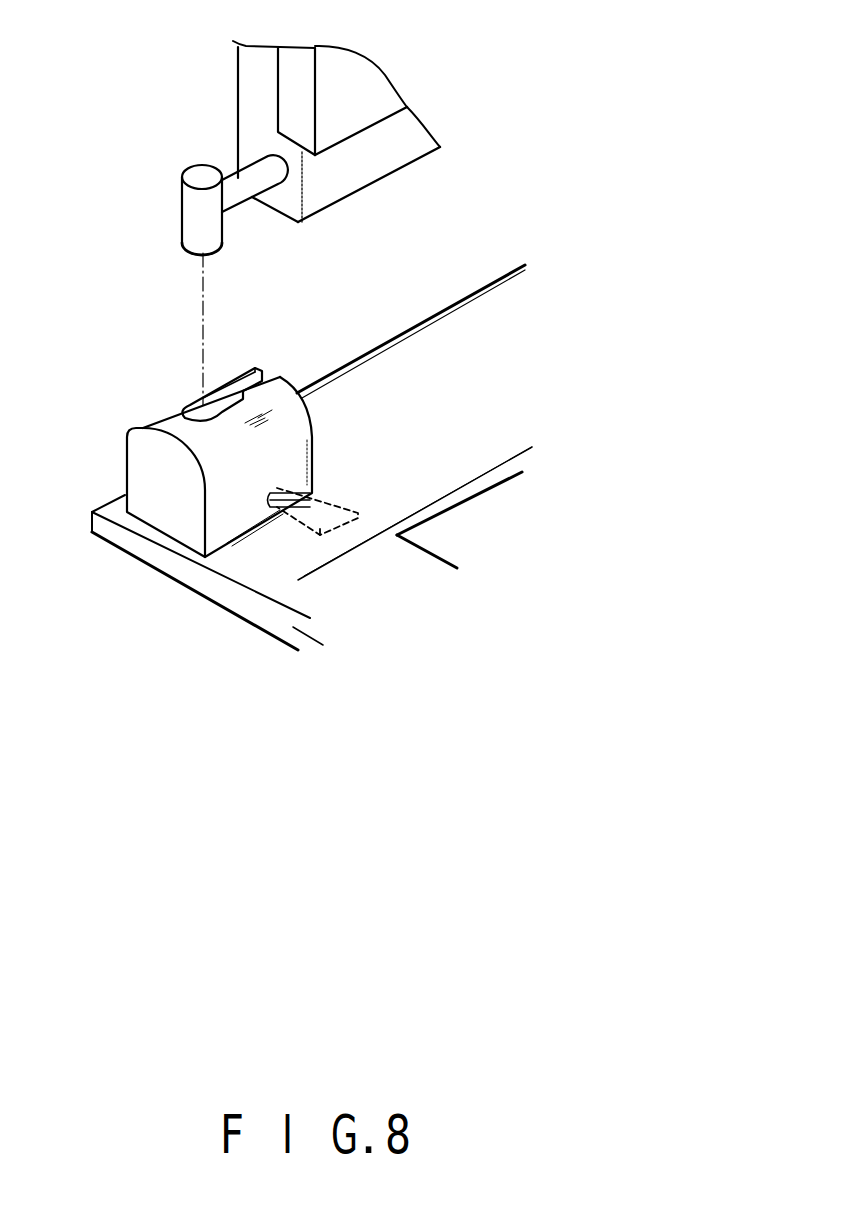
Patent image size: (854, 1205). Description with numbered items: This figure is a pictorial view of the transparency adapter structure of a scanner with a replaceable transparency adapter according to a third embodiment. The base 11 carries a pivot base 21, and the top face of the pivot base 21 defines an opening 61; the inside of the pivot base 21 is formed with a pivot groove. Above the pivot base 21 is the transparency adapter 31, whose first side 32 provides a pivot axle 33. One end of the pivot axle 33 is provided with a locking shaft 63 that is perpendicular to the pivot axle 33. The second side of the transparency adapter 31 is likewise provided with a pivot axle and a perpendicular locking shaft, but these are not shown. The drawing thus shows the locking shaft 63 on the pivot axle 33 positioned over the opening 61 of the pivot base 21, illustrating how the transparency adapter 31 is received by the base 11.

The base 11 is at (310, 618).
The pivot base 21 is at (140, 477).
The transparency adapter 31 is at (370, 80).
The first side 32 is at (252, 82).
The pivot axle 33 is at (245, 193).
The opening 61 is at (262, 383).
The locking shaft 63 is at (185, 213).